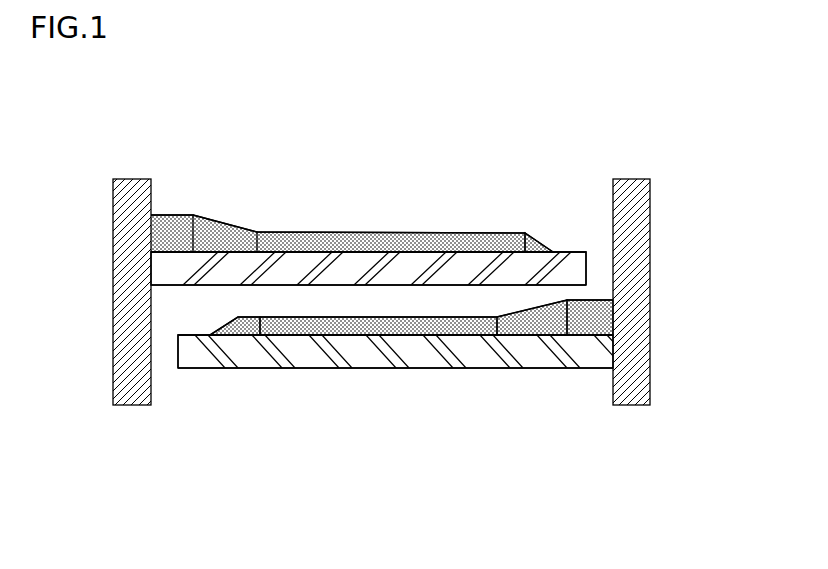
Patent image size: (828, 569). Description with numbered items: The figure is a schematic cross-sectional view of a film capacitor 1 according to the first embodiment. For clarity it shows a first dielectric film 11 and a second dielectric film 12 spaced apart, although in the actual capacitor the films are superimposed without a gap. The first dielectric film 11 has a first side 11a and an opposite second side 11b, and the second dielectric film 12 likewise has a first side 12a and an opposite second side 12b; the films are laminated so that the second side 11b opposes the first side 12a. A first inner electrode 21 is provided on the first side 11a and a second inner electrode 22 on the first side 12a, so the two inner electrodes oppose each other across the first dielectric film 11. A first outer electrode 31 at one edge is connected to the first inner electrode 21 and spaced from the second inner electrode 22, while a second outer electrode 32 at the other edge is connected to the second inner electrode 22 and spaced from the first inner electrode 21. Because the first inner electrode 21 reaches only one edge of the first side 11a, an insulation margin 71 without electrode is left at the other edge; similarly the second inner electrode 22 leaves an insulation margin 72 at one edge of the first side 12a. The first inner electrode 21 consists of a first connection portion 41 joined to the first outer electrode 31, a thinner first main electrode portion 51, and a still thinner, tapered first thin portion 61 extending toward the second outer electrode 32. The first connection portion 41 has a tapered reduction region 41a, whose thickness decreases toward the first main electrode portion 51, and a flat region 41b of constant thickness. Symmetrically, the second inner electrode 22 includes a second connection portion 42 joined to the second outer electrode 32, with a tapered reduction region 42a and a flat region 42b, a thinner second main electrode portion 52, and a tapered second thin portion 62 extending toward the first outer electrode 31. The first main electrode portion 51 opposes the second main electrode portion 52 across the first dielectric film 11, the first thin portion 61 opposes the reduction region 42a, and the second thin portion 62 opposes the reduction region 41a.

The film capacitor 1 is at (658, 152).
The first dielectric film 11 is at (310, 269).
The first side of first dielectric film 11a is at (158, 258).
The second side of first dielectric film 11b is at (172, 286).
The second dielectric film 12 is at (455, 351).
The first side of second dielectric film 12a is at (612, 341).
The second side of second dielectric film 12b is at (593, 368).
The first inner electrode 21 is at (352, 150).
The second inner electrode 22 is at (411, 412).
The first outer electrode 31 is at (127, 200).
The second outer electrode 32 is at (640, 198).
The first connection portion 41 is at (214, 175).
The reduction region of first connection portion 41a is at (231, 196).
The flat region of first connection portion 41b is at (167, 225).
The second connection portion 42 is at (535, 391).
The reduction region of second connection portion 42a is at (540, 323).
The flat region of second connection portion 42b is at (588, 322).
The first main electrode portion 51 is at (401, 240).
The second main electrode portion 52 is at (385, 328).
The first thin portion 61 is at (481, 175).
The second thin portion 62 is at (232, 328).
The insulation margin 71 is at (585, 253).
The insulation margin 72 is at (190, 333).